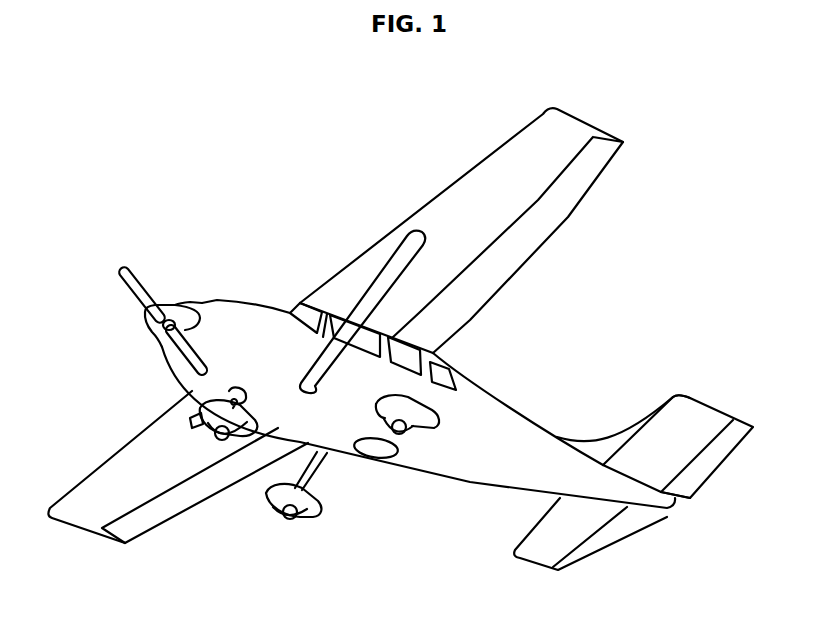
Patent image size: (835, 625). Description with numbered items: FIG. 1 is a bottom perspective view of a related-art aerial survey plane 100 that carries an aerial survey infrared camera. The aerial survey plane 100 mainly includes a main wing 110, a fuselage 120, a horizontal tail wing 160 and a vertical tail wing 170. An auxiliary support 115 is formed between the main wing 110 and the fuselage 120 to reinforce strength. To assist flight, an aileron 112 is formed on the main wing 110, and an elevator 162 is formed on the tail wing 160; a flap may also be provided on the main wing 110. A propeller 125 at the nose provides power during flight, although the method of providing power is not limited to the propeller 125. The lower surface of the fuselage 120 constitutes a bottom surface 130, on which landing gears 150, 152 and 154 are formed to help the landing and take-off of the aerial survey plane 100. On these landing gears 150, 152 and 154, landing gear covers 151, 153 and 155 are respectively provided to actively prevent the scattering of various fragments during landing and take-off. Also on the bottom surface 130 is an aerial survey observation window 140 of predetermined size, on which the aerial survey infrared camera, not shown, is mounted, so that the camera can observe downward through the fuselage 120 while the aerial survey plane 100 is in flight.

The aerial survey plane 100 is at (247, 158).
The main wing 110 is at (480, 192).
The aileron 112 is at (525, 258).
The auxiliary support 115 is at (377, 295).
The fuselage 120 is at (465, 385).
The propeller 125 is at (133, 274).
The bottom surface 130 is at (488, 468).
The aerial survey observation window 140 is at (377, 457).
The landing gear 150 is at (298, 478).
The landing gear cover 151 is at (236, 440).
The landing gear 152 is at (400, 434).
The landing gear cover 153 is at (434, 424).
The landing gear 154 is at (289, 521).
The landing gear cover 155 is at (318, 517).
The horizontal tail wing 160 is at (695, 467).
The elevator 162 is at (703, 468).
The vertical tail wing 170 is at (670, 403).